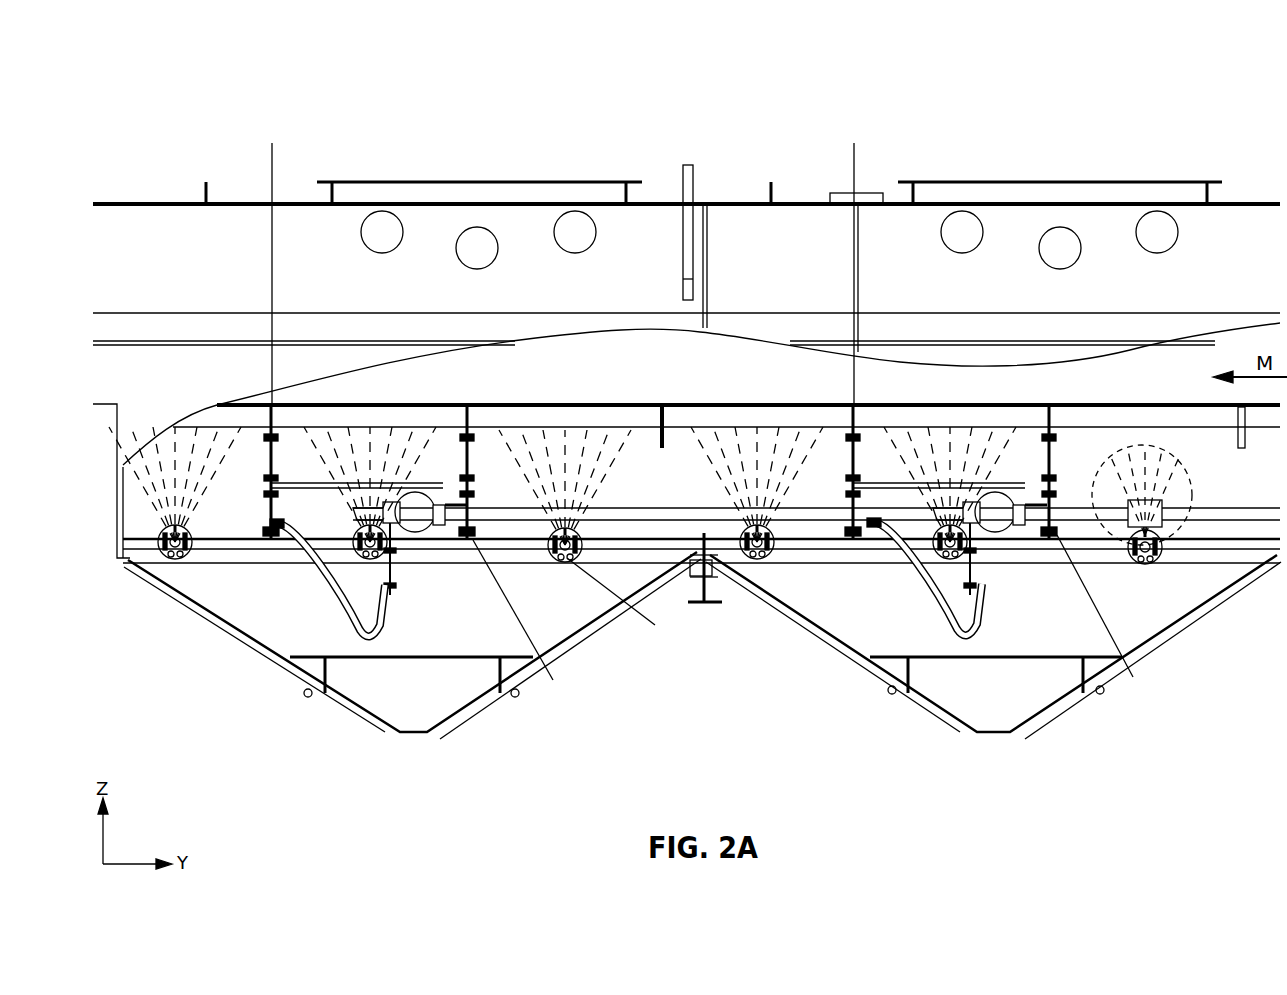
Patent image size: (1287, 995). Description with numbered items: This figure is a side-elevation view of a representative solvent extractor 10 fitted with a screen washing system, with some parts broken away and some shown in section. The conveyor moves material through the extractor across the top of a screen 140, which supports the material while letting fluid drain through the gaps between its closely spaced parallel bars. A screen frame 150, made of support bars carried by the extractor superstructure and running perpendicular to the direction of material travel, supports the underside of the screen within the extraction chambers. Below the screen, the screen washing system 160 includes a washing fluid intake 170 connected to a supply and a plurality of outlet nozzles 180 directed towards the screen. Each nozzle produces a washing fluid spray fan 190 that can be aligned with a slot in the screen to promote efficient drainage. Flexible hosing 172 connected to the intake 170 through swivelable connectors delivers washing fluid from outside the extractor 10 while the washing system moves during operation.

The extractor 10 is at (175, 100).
The screen 140 is at (537, 405).
The screen frame 150 is at (282, 438).
The screen washing system 160 is at (882, 592).
The washing fluid intake 170 is at (268, 540).
The flexible hosing 172 is at (332, 578).
The outlet nozzles 180 is at (155, 545).
The washing fluid spray fan 190 is at (670, 480).